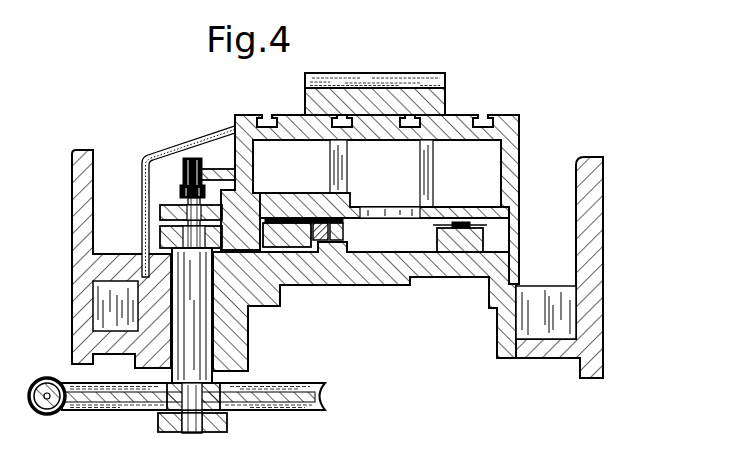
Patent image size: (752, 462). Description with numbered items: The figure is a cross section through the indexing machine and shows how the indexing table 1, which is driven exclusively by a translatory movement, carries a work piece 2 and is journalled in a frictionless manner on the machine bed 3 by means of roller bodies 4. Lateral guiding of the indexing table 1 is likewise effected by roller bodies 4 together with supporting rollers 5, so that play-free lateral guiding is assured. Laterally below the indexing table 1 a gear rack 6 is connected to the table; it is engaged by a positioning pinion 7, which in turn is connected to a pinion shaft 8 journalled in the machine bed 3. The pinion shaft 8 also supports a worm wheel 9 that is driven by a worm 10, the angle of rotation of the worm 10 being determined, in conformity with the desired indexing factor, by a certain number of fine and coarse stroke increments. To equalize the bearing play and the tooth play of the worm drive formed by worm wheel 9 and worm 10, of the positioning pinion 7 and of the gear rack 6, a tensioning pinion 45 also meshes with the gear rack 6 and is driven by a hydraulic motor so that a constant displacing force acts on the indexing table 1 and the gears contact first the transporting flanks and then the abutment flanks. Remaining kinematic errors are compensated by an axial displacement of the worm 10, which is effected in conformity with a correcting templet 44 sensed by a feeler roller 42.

The indexing table 1 is at (512, 119).
The work piece 2 is at (447, 103).
The machine bed 3 is at (593, 296).
The roller bodies 4 is at (300, 252).
The supporting rollers 5 is at (345, 234).
The gear rack 6 is at (265, 193).
The positioning pinion 7 is at (160, 237).
The pinion shaft 8 is at (207, 343).
The worm wheel 9 is at (110, 402).
The worm 10 is at (43, 377).
The feeler roller 42 is at (185, 170).
The correcting templet 44 is at (212, 168).
The tensioning pinion 45 is at (161, 207).